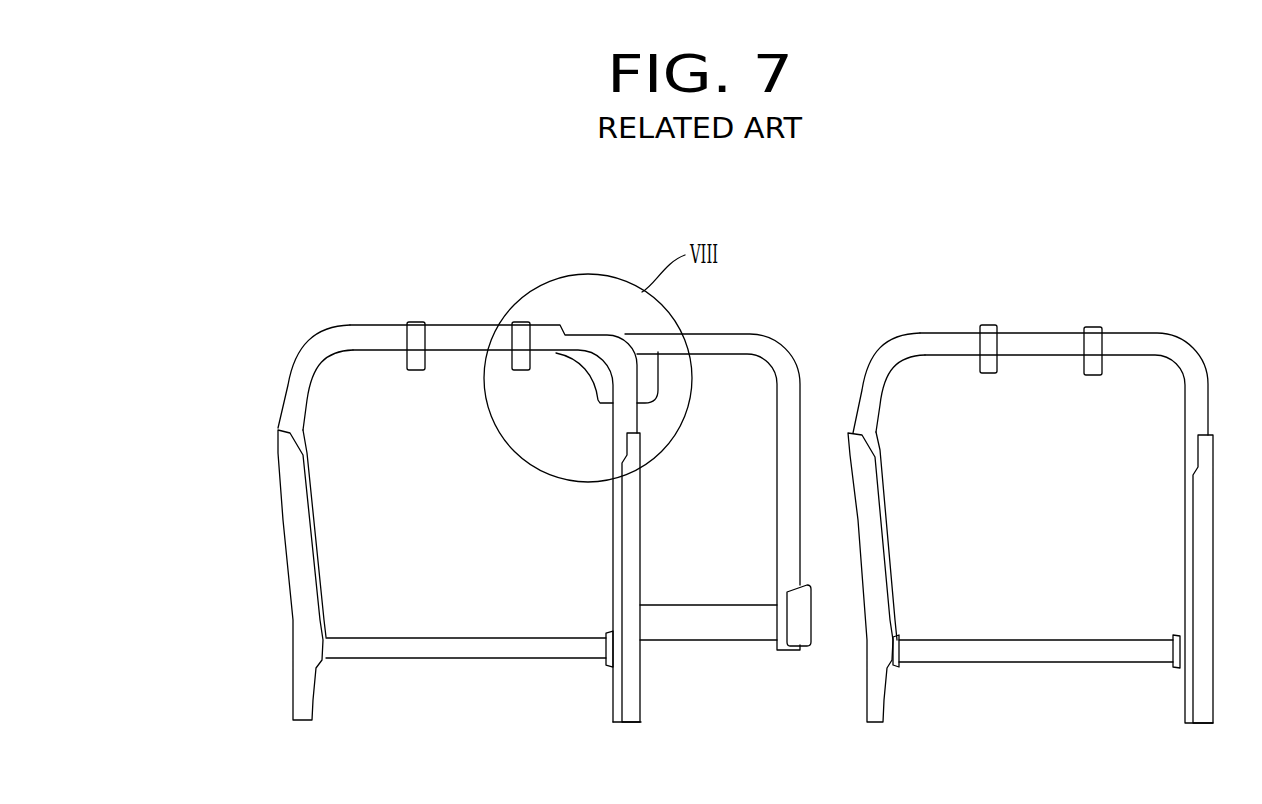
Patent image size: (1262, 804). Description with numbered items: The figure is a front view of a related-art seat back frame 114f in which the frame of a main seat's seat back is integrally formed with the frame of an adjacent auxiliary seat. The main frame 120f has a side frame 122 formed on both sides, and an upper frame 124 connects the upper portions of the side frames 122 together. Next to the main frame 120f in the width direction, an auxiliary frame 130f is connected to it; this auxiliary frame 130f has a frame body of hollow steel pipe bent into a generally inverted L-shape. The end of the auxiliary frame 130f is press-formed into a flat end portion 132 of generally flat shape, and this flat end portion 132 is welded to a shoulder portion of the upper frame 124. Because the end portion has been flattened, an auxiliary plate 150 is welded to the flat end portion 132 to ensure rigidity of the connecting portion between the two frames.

The seat back frame 114f is at (268, 398).
The main frame 120f is at (370, 326).
The side frame 122 is at (290, 626).
The upper frame 124 is at (460, 325).
The auxiliary frame 130f is at (782, 351).
The flat end portion 132 is at (574, 330).
The auxiliary plate 150 is at (647, 390).